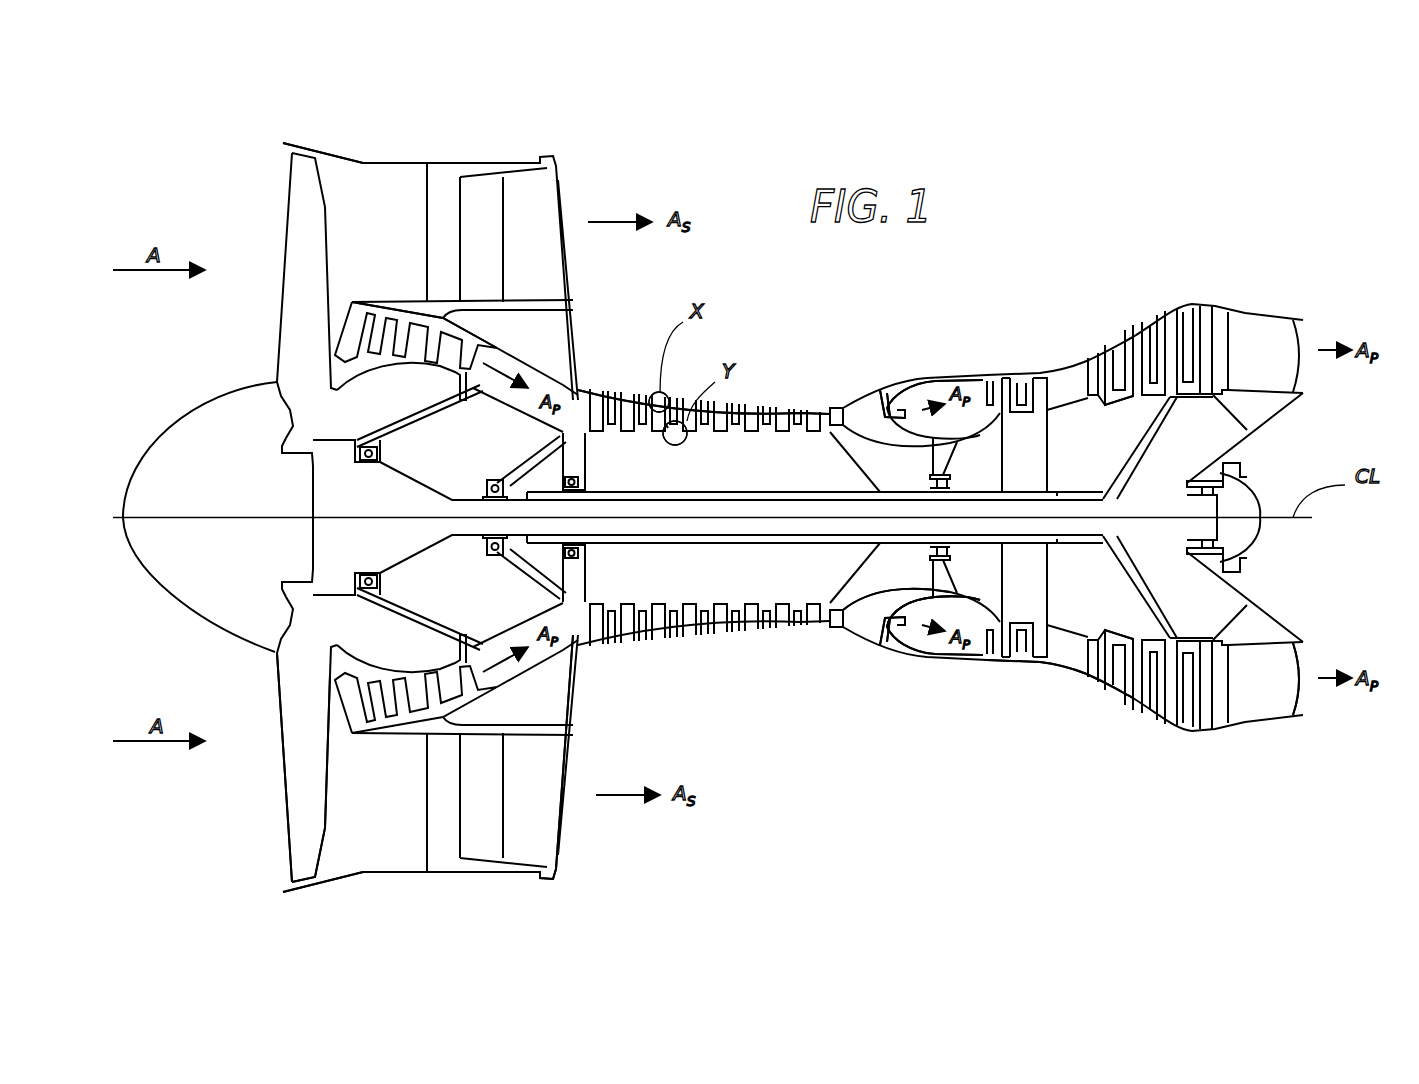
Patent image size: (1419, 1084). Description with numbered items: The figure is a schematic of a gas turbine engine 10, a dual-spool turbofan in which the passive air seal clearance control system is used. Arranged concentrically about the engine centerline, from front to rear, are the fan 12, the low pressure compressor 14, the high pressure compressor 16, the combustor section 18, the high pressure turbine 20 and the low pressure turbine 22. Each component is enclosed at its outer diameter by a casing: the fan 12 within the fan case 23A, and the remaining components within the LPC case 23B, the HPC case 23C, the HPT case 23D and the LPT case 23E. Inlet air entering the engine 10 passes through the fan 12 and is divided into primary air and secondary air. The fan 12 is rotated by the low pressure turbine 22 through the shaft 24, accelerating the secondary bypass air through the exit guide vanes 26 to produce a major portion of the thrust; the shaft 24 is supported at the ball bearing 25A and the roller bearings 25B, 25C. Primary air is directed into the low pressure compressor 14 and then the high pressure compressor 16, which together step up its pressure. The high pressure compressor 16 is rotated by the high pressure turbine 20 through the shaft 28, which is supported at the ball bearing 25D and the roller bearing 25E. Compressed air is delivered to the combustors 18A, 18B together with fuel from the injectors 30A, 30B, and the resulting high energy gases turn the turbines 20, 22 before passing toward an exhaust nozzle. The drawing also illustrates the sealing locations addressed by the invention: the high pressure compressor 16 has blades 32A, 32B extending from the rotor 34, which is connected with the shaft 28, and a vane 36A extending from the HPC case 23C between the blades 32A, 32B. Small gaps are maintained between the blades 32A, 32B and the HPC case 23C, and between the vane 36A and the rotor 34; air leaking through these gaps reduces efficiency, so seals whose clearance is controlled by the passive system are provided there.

The gas turbine engine 10 is at (1082, 222).
The fan 12 is at (287, 797).
The low pressure compressor 14 is at (418, 738).
The high pressure compressor 16 is at (757, 648).
The combustor section 18 is at (927, 672).
The combustor 18A is at (972, 643).
The combustor 18B is at (977, 388).
The high pressure turbine 20 is at (1013, 680).
The low pressure turbine 22 is at (1148, 738).
The fan case 23A is at (395, 160).
The LPC case 23B is at (470, 314).
The HPC case 23C is at (730, 410).
The HPT case 23D is at (1063, 670).
The LPT case 23E is at (1207, 306).
The shaft 24 is at (803, 507).
The ball bearing 25A is at (353, 440).
The roller bearing 25B is at (577, 652).
The roller bearing 25C is at (1205, 565).
The ball bearing 25D is at (570, 480).
The roller bearing 25E is at (940, 475).
The exit guide vanes 26 is at (487, 270).
The shaft 28 is at (905, 605).
The injector 30A is at (883, 390).
The injector 30B is at (884, 645).
The blade 32A is at (643, 430).
The blade 32B is at (683, 440).
The rotor 34 is at (653, 447).
The vane 36A is at (673, 400).